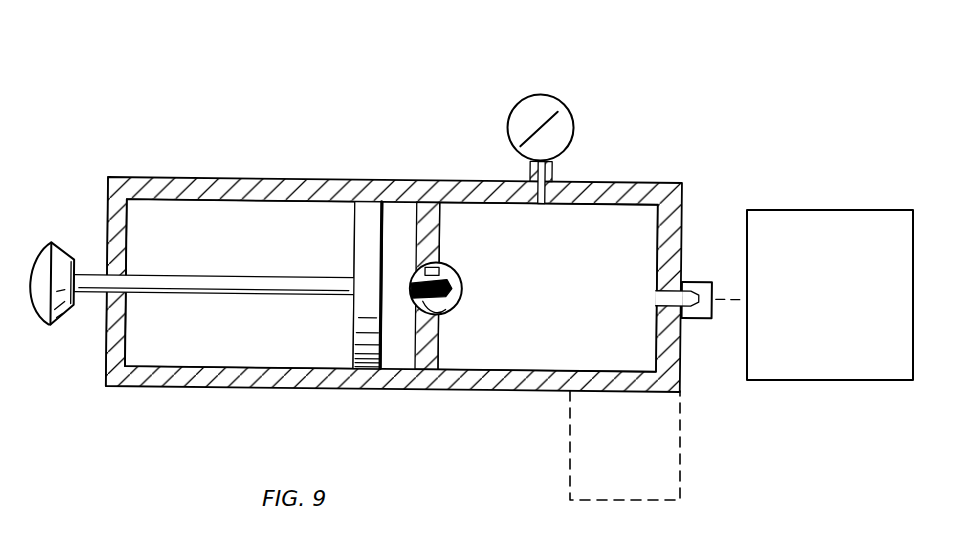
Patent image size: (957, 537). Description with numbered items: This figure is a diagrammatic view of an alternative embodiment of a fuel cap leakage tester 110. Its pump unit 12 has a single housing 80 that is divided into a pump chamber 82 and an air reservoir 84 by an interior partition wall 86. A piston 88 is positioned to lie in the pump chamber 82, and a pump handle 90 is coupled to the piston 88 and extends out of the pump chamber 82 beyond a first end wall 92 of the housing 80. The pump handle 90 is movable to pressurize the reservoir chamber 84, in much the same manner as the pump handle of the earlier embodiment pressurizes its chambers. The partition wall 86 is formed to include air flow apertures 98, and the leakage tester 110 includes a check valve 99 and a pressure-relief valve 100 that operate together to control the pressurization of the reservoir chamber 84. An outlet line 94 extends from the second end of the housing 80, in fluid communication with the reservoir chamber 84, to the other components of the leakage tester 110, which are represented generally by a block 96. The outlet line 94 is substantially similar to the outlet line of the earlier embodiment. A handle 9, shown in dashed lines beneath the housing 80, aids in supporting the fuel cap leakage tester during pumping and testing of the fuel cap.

The leakage tester 110 is at (190, 100).
The pump unit 12 is at (353, 160).
The housing 80 is at (297, 192).
The pump chamber 82 is at (198, 220).
The air reservoir 84 is at (594, 244).
The interior partition wall 86 is at (435, 232).
The piston 88 is at (358, 267).
The pump handle 90 is at (62, 260).
The first end wall 92 is at (117, 215).
The outlet line 94 is at (702, 280).
The block 96 is at (823, 265).
The air flow apertures 98 is at (427, 265).
The check valve 99 is at (450, 298).
The pressure-relief valve 100 is at (572, 113).
The handle 9 is at (576, 456).